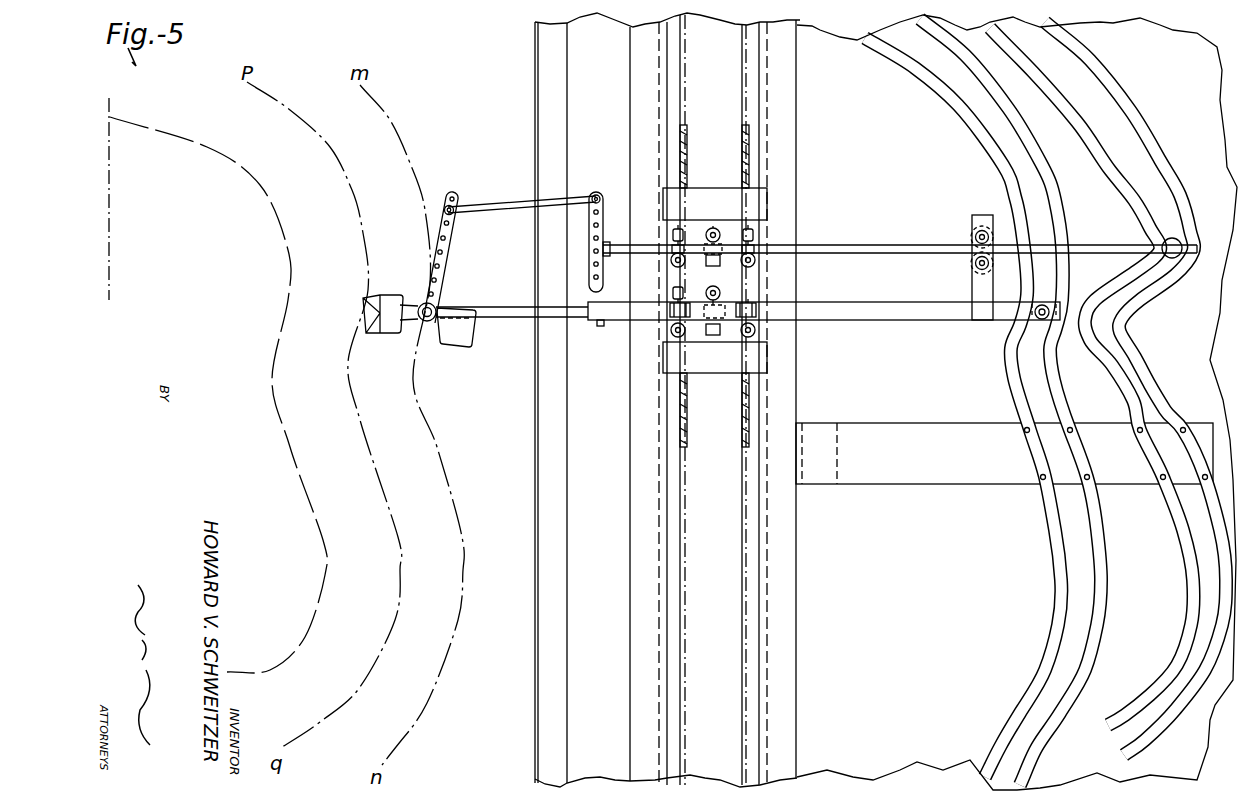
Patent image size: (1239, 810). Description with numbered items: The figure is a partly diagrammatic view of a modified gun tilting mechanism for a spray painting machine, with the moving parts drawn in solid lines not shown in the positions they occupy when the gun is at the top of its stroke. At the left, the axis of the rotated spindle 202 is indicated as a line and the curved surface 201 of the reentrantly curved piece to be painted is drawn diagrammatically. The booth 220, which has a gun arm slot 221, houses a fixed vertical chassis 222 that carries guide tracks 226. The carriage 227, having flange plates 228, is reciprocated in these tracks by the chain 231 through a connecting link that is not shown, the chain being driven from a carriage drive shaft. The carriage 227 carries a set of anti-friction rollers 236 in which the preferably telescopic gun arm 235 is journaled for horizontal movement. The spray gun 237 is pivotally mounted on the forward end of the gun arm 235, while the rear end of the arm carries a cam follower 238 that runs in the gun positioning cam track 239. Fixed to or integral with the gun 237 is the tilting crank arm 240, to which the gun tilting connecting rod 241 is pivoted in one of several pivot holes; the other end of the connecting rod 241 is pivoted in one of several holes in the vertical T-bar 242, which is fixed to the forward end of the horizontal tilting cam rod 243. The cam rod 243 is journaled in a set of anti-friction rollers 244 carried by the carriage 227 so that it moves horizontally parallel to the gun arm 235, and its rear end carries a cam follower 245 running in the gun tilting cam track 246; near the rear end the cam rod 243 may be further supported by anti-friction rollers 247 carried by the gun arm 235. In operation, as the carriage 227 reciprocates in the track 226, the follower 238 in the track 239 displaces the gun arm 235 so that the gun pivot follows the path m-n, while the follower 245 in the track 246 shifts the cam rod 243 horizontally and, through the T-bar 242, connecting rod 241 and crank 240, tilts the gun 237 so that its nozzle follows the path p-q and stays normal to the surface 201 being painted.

The curved surface 201 is at (208, 147).
The axis of the rotated spindle 202 is at (113, 113).
The booth 220 is at (1170, 47).
The gun arm slot 221 is at (535, 60).
The fixed vertical chassis 222 is at (770, 129).
The guide tracks 226 is at (642, 137).
The carriage 227 is at (752, 224).
The flange plates 228 is at (750, 201).
The chain 231 is at (742, 150).
The gun arm 235 is at (889, 322).
The anti-friction rollers 236 is at (766, 310).
The spray gun 237 is at (451, 338).
The cam follower 238 is at (1040, 324).
The gun positioning cam track 239 is at (1047, 378).
The tilting crank arm 240 is at (448, 253).
The gun tilting connecting rod 241 is at (500, 203).
The vertical T-bar 242 is at (607, 215).
The horizontal tilting cam rod 243 is at (875, 249).
The anti-friction rollers 244 is at (762, 239).
The cam follower 245 is at (1166, 241).
The gun tilting cam track 246 is at (1150, 190).
The anti-friction rollers 247 is at (966, 232).